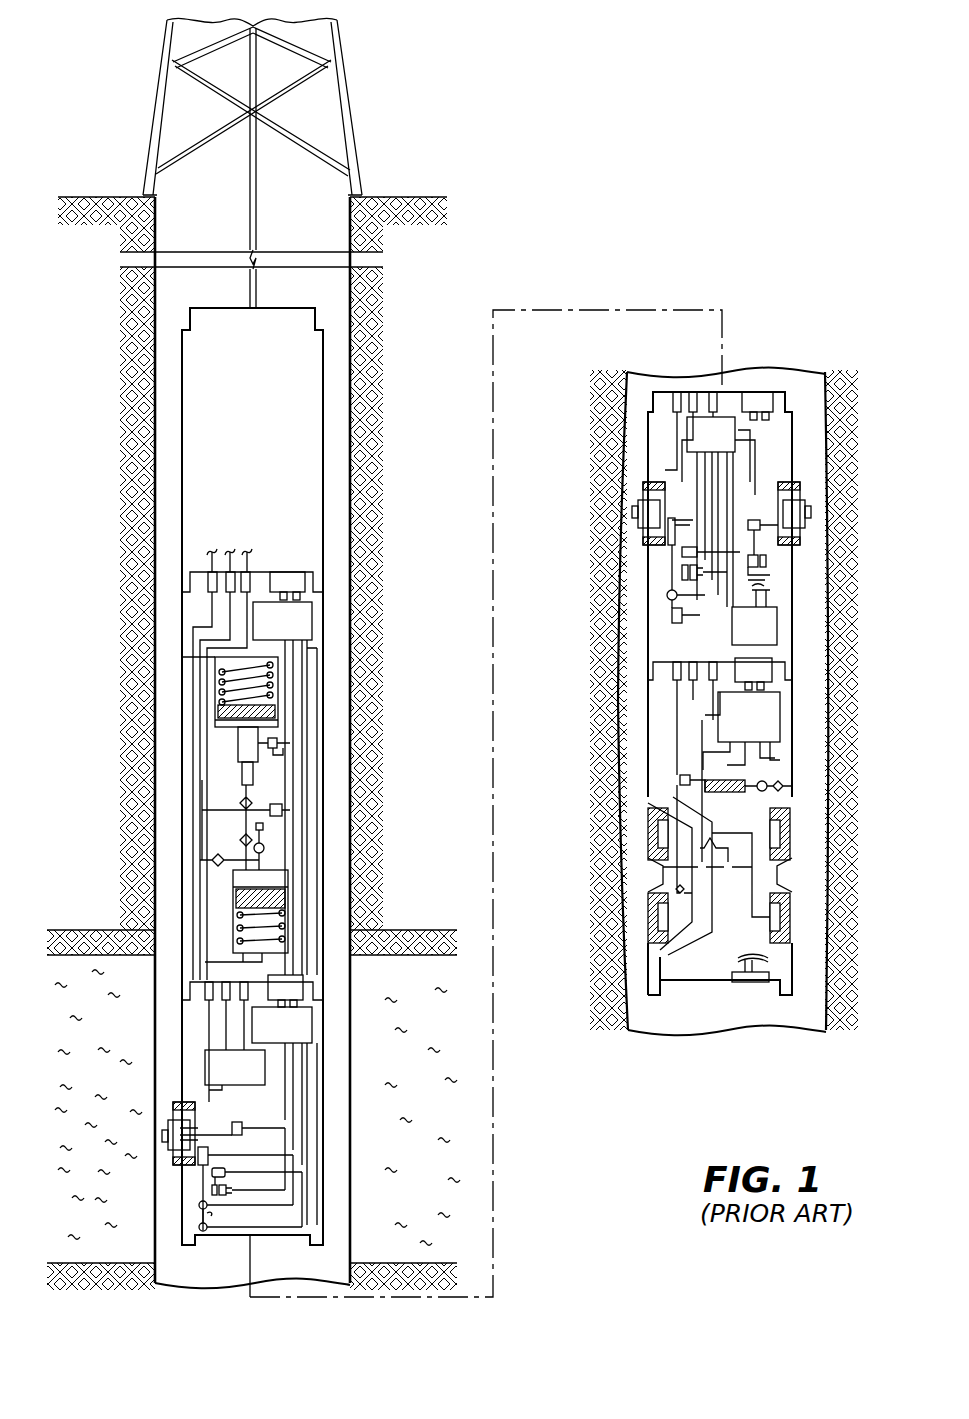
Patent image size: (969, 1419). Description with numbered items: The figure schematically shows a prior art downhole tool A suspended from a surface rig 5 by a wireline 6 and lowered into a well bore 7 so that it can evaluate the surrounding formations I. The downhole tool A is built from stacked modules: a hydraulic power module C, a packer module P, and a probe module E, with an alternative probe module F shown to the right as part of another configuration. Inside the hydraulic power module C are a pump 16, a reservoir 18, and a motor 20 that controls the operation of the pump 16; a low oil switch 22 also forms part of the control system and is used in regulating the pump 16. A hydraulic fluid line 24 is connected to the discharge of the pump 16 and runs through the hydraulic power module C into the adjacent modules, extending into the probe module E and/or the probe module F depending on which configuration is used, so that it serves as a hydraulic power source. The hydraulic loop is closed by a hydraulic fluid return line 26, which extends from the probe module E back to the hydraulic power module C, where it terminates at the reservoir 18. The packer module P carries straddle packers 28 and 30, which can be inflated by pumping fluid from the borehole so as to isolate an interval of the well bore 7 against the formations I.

The rig 5 is at (355, 98).
The wireline 6 is at (258, 176).
The well bore 7 is at (340, 212).
The hydraulic power module C is at (180, 695).
The probe module E is at (179, 1026).
The formations I is at (130, 1213).
The reservoir 18 is at (283, 672).
The motor 20 is at (262, 753).
The low oil switch 22 is at (275, 745).
The pump 16 is at (253, 785).
The hydraulic fluid line 24 is at (223, 832).
The hydraulic fluid return line 26 is at (205, 893).
The downhole tool A is at (575, 1089).
The probe module F is at (800, 452).
The packer module P is at (800, 968).
The straddle packer 28 is at (640, 834).
The straddle packer 30 is at (640, 908).